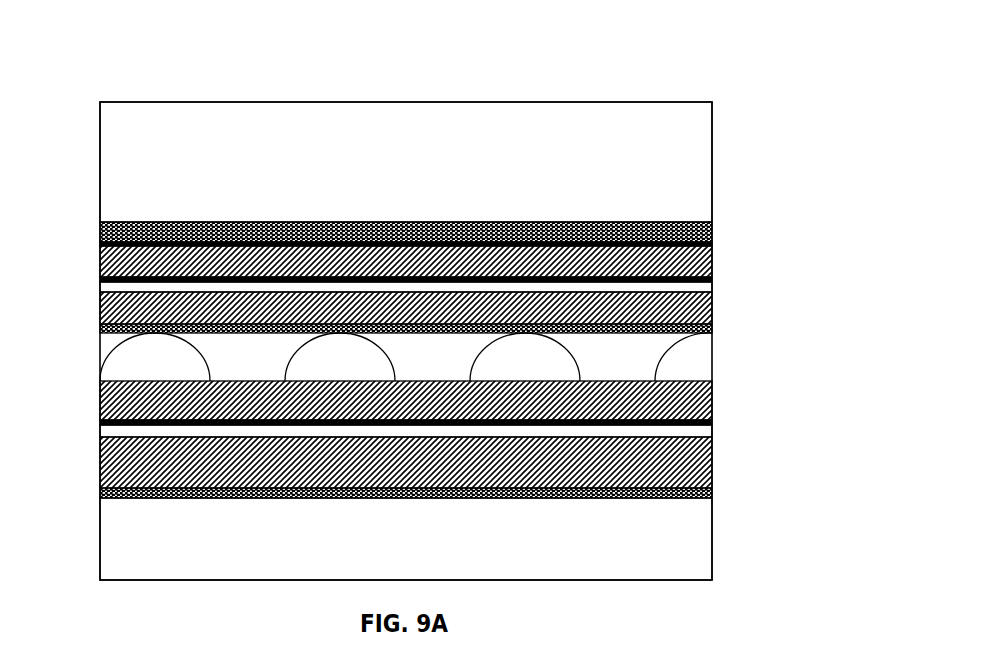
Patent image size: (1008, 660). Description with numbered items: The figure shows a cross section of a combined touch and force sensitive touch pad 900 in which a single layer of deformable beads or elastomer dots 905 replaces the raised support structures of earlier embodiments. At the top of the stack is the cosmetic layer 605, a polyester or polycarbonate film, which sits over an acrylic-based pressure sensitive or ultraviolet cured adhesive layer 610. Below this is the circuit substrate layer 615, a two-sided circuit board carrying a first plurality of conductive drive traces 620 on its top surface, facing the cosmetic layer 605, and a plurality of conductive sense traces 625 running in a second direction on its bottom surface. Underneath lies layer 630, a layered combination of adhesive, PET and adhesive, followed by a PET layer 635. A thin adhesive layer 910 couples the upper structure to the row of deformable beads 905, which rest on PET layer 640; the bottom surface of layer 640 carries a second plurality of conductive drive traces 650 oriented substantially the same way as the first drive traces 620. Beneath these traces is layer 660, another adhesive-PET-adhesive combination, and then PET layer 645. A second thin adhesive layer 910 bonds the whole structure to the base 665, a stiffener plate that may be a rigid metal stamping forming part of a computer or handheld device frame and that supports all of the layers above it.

The touch pad 900 is at (586, 84).
The cosmetic layer 605 is at (525, 174).
The adhesive layer 610 is at (712, 233).
The circuit substrate layer 615 is at (712, 261).
The conductive drive traces 620 is at (100, 245).
The conductive sense traces 625 is at (100, 278).
The adhesive-PET-adhesive layer 630 is at (712, 286).
The PET layer 635 is at (100, 308).
The PET layer 640 is at (100, 407).
The PET layer 645 is at (100, 465).
The second conductive drive traces 650 is at (712, 420).
The adhesive-PET-adhesive layer 660 is at (712, 431).
The base 665 is at (483, 554).
The deformable beads 905 is at (173, 374).
The thin adhesive layers 910 is at (712, 327).